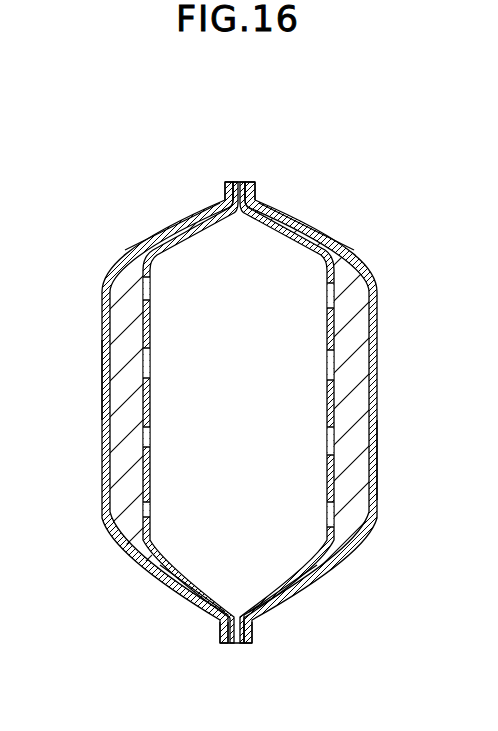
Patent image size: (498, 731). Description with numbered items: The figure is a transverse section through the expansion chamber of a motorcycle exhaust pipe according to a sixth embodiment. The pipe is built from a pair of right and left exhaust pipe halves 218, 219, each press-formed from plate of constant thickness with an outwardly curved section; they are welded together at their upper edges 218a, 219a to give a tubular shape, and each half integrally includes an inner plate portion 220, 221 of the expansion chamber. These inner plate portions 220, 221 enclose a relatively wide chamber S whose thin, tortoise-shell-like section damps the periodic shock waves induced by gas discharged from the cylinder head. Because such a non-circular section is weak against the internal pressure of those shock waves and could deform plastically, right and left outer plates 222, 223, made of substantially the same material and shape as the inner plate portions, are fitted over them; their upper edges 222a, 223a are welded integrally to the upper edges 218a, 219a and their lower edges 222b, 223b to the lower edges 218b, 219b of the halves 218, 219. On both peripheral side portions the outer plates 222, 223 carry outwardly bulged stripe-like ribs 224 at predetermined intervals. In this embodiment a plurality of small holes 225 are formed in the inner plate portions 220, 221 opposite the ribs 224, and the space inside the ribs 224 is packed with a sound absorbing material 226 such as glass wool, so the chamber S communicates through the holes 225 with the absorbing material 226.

The exhaust pipe half 218 is at (118, 536).
The exhaust pipe half 219 is at (336, 486).
The inner plate portion 220 is at (179, 571).
The inner plate portion 221 is at (320, 558).
The outer plate 222 is at (143, 246).
The outer plate 223 is at (344, 250).
The upper edge of outer plate 222a is at (226, 185).
The upper edge of outer plate 223a is at (253, 184).
The lower edge of outer plate 222b is at (220, 632).
The lower edge of outer plate 223b is at (254, 632).
The upper edge of exhaust pipe half 218a is at (237, 182).
The upper edge of exhaust pipe half 219a is at (247, 182).
The lower edge of exhaust pipe half 218b is at (232, 645).
The lower edge of exhaust pipe half 219b is at (241, 645).
The rib 224 is at (103, 385).
The small hole 225 is at (151, 301).
The sound absorbing material 226 is at (350, 397).
The chamber S is at (281, 288).